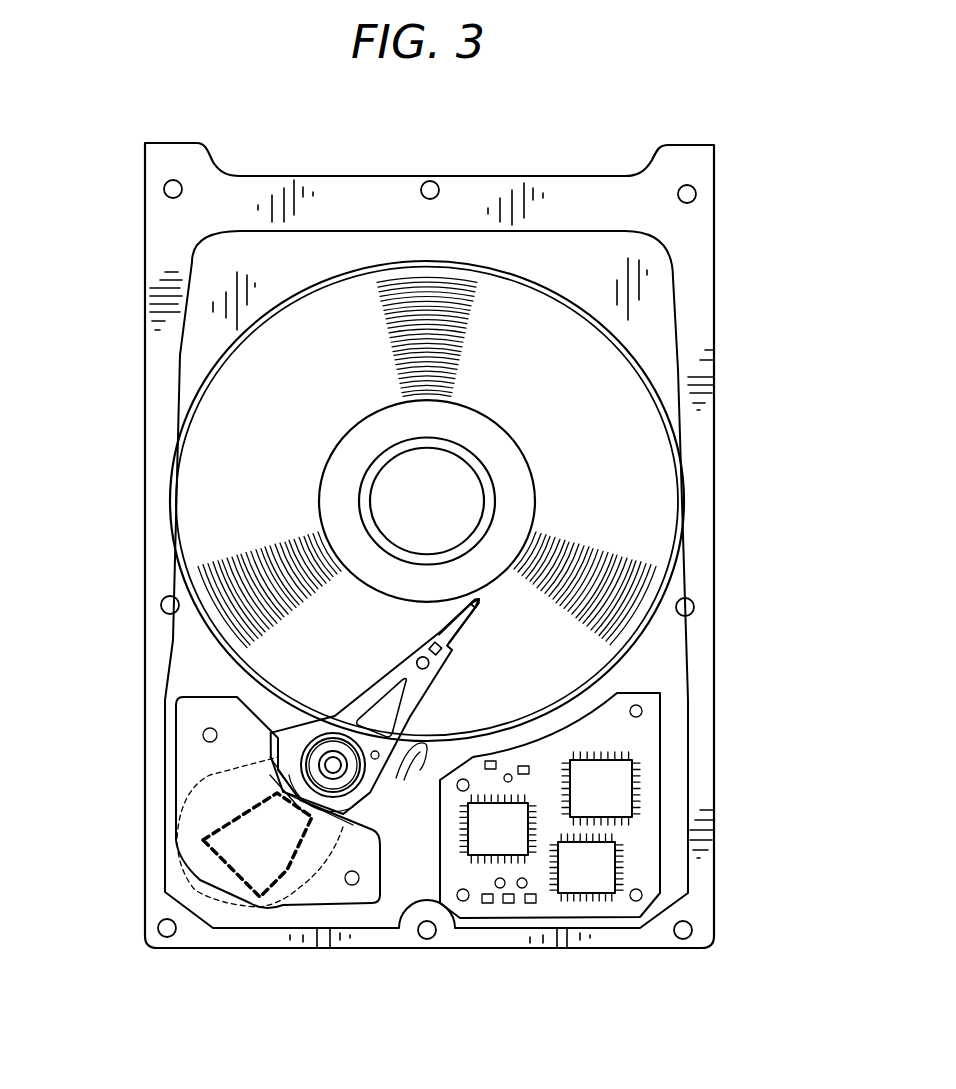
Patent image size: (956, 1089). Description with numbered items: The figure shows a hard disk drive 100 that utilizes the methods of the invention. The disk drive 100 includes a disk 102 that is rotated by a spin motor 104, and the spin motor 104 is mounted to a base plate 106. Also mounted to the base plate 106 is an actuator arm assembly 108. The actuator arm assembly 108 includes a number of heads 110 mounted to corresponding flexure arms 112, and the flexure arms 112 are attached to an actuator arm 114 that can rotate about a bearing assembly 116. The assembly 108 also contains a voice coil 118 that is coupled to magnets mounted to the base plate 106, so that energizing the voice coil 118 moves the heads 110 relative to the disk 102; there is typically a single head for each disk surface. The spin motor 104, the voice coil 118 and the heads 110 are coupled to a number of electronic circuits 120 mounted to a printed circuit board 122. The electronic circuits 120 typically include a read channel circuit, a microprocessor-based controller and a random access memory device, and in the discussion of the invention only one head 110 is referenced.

The hard disk drive 100 is at (695, 108).
The disk 102 is at (586, 393).
The spin motor 104 is at (518, 468).
The base plate 106 is at (213, 268).
The actuator arm assembly 108 is at (377, 756).
The head 110 is at (484, 603).
The flexure arm 112 is at (442, 632).
The actuator arm 114 is at (384, 690).
The bearing assembly 116 is at (378, 779).
The voice coil 118 is at (280, 850).
The electronic circuits 120 is at (617, 788).
The printed circuit board 122 is at (643, 730).